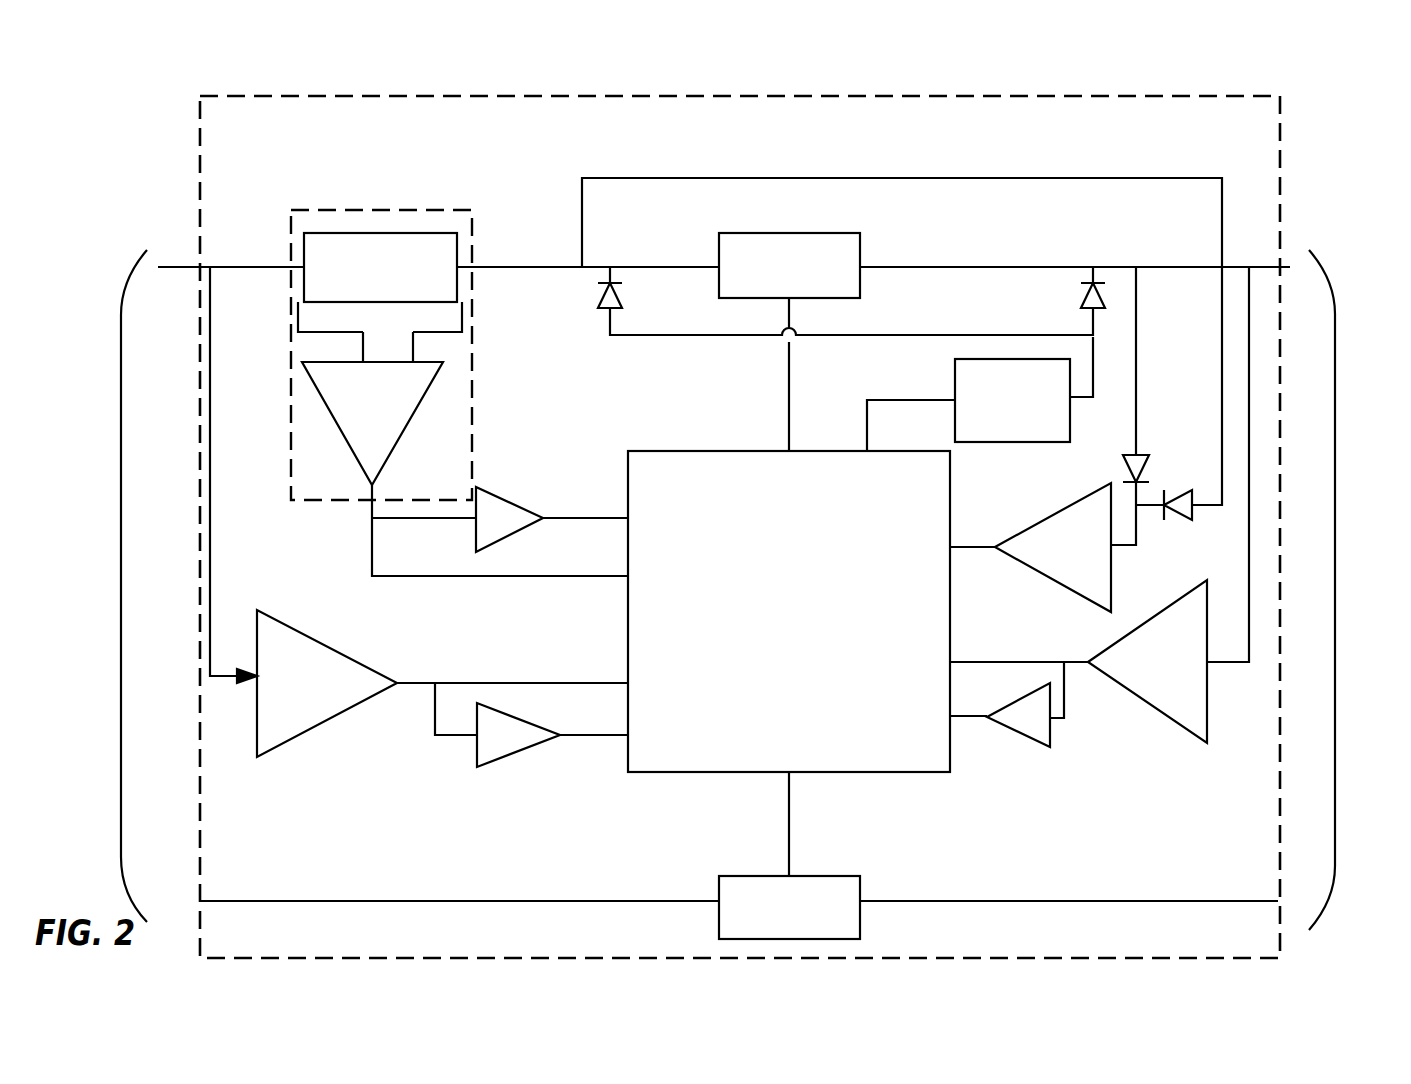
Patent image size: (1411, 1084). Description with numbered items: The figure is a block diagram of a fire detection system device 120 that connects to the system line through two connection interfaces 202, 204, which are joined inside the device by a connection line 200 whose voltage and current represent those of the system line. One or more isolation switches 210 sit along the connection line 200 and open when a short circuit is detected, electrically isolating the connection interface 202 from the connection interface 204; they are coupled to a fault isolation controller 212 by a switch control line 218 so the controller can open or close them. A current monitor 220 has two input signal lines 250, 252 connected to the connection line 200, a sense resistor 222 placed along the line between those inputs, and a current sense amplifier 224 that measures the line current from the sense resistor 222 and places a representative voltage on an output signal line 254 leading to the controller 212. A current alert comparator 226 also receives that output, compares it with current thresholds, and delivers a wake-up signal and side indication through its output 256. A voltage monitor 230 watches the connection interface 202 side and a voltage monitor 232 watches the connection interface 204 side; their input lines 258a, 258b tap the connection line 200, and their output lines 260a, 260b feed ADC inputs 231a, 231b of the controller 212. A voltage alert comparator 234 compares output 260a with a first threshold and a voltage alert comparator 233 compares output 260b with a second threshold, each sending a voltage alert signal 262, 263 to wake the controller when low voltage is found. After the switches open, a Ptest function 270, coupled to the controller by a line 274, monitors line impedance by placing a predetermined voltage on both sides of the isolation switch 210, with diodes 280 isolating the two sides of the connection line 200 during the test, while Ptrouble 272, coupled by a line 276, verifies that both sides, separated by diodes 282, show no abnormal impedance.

The device 120 is at (368, 96).
The connection line 200 is at (1022, 267).
The connection interface 202 is at (121, 589).
The connection interface 204 is at (1336, 590).
The isolation switch 210 is at (772, 263).
The fault isolation controller 212 is at (763, 576).
The switch control line 218 is at (788, 587).
The current monitor 220 is at (473, 248).
The sense resistor 222 is at (363, 267).
The current sense amplifier 224 is at (323, 401).
The current alert comparator 226 is at (457, 510).
The voltage monitor 230 is at (286, 668).
The ADC input 231a is at (555, 689).
The ADC input 231b is at (994, 659).
The voltage monitor 232 is at (1148, 646).
The voltage alert comparator 233 is at (1050, 735).
The voltage alert comparator 234 is at (518, 738).
The input signal line 250 is at (362, 352).
The input signal line 252 is at (414, 352).
The output signal line 254 is at (500, 545).
The current alert comparator output 256 is at (585, 507).
The input line 258a is at (210, 653).
The input line 258b is at (1222, 667).
The output line 260a is at (415, 682).
The output line 260b is at (1033, 662).
The voltage alert signal 262 is at (594, 720).
The voltage alert signal 263 is at (962, 718).
The Ptest function 270 is at (995, 383).
The Ptrouble 272 is at (1054, 546).
The line 274 is at (911, 411).
The line 276 is at (972, 530).
The diode 280 is at (622, 296).
The diode 282 is at (1189, 485).